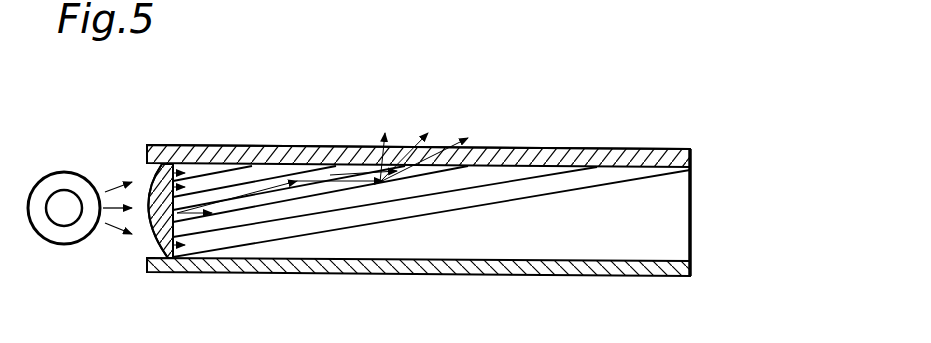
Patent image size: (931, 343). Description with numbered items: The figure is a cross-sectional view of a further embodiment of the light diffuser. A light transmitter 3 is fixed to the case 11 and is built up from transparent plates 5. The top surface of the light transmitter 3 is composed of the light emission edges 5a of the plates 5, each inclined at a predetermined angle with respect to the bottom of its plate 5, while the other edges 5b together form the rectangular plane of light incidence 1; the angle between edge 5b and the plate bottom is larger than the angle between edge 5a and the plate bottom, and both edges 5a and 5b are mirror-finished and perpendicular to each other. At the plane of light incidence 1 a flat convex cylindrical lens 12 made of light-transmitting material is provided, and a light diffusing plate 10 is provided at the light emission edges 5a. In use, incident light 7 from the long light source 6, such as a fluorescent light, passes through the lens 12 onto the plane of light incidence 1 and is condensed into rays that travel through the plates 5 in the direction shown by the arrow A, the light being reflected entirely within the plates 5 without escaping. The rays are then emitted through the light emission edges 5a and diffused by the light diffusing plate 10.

The plane of incidence of light 1 is at (155, 236).
The light transmitter 3 is at (405, 225).
The transparent plate 5 is at (267, 213).
The light emission edge 5a is at (296, 146).
The other edge 5b is at (147, 145).
The light source 6 is at (63, 245).
The incident light 7 is at (200, 208).
The light diffusing plate 10 is at (540, 153).
The case 11 is at (497, 272).
The lens 12 is at (147, 187).
The arrow A is at (362, 176).